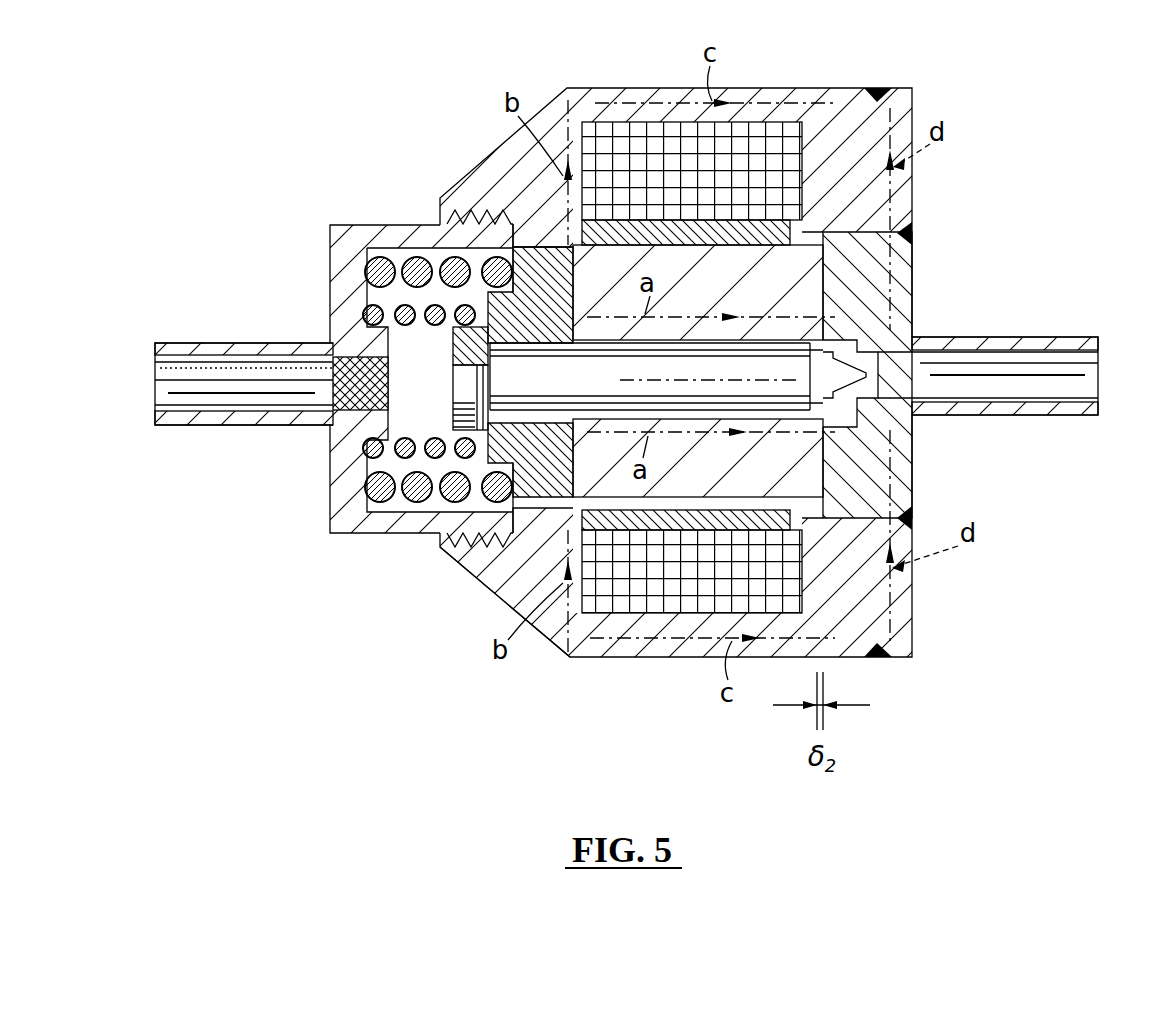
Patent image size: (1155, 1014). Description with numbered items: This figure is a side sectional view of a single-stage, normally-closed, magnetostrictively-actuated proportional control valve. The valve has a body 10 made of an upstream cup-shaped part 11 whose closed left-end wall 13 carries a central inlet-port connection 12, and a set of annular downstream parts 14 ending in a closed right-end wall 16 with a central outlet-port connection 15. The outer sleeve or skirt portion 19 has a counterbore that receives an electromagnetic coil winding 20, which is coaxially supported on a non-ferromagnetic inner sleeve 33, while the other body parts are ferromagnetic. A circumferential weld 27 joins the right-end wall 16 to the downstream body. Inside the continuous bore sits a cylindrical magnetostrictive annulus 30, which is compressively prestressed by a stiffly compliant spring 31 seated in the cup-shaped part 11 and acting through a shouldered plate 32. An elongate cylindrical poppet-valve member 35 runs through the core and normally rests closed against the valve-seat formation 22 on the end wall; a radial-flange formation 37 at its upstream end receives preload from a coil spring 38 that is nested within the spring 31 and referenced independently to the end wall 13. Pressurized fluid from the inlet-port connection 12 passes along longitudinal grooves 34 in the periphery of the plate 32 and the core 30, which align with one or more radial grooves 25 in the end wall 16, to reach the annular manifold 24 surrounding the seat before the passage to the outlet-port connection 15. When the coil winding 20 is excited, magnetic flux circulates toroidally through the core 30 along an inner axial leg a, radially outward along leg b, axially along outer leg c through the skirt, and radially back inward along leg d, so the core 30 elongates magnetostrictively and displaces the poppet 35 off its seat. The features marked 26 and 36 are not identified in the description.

The body 10 is at (352, 572).
The upstream cup-shaped part 11 is at (345, 214).
The inlet-port connection 12 is at (241, 344).
The closed left-end wall 13 is at (345, 437).
The annular downstream parts 14 is at (805, 82).
The outlet-port connection 15 is at (1037, 337).
The closed right-end wall 16 is at (903, 302).
The outer sleeve or skirt portion 19 is at (612, 108).
The electromagnetic coil winding 20 is at (615, 592).
The valve-seat formation 22 is at (806, 366).
The manifold 24 is at (857, 352).
The radial grooves 25 is at (912, 518).
The seal 26 is at (877, 87).
The circumferential weld 27 is at (912, 233).
The magnetostrictive annulus 30 is at (700, 289).
The prestressing spring 31 is at (368, 264).
The shouldered plate 32 is at (523, 425).
The inner sleeve 33 is at (576, 305).
The longitudinal grooves 34 is at (740, 500).
The poppet-valve member 35 is at (578, 384).
The nozzle 36 is at (858, 395).
The radial-flange formation 37 is at (453, 406).
The coil spring 38 is at (408, 326).